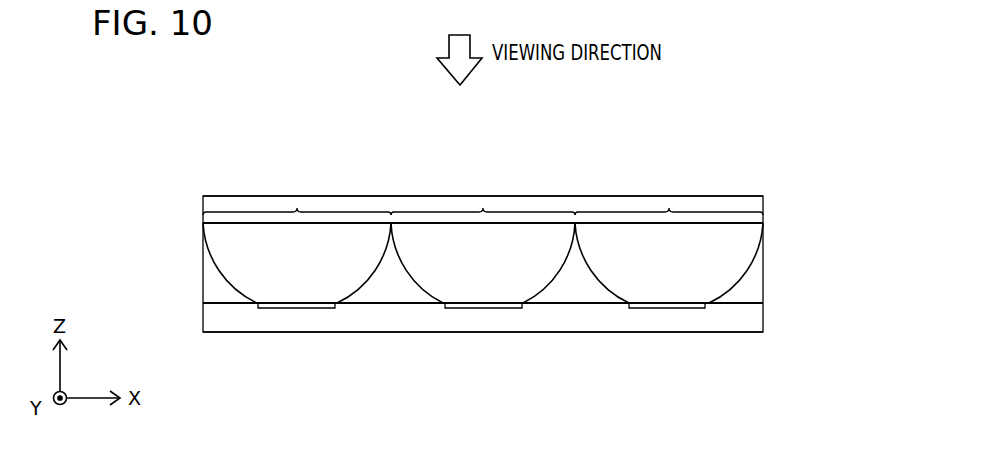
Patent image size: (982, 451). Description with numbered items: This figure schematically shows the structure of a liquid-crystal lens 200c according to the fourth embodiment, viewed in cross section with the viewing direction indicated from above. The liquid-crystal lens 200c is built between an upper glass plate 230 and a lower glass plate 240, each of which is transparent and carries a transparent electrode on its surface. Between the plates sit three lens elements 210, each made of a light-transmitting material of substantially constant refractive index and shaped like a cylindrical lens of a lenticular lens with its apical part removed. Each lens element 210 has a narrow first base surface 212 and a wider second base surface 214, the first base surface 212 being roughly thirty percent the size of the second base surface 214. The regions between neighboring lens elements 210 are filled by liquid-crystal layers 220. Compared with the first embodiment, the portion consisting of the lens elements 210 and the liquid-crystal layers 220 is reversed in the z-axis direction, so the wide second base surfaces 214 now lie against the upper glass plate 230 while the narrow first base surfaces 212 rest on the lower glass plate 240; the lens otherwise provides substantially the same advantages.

The liquid-crystal lens 200c is at (782, 158).
The upper glass plate 230 is at (203, 212).
The lower glass plate 240 is at (203, 318).
The second base surface 214 is at (297, 208).
The lens element 210 is at (313, 270).
The first base surface 212 is at (297, 308).
The liquid-crystal layer 220 is at (223, 296).